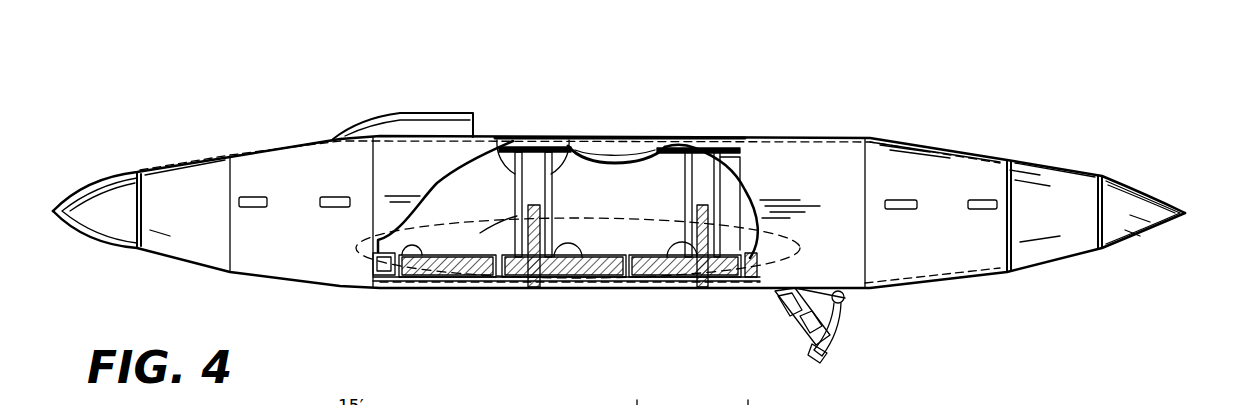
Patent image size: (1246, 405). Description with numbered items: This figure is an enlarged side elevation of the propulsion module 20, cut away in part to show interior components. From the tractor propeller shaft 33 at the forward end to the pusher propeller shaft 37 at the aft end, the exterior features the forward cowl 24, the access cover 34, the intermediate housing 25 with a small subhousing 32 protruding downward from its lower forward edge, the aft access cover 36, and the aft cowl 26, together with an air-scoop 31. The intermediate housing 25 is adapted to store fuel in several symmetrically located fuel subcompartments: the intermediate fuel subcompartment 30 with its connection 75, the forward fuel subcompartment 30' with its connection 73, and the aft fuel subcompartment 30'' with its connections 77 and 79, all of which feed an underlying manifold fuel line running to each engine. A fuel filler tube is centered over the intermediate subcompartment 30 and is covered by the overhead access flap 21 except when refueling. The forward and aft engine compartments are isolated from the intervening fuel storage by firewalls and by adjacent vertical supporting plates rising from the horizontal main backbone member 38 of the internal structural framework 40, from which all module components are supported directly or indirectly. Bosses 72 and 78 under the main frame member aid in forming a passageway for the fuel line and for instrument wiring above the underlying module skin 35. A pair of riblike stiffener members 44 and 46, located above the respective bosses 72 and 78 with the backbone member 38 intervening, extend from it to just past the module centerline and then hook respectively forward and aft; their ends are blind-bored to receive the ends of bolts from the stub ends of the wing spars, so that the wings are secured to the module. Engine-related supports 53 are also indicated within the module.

The propulsion module 20 is at (487, 114).
The overhead access flap 21 is at (622, 137).
The forward cowl 24 is at (1050, 235).
The intermediate housing 25 is at (733, 128).
The aft cowl 26 is at (187, 178).
The intermediate fuel subcompartment 30 is at (533, 138).
The forward fuel subcompartment 30' is at (727, 180).
The aft fuel subcompartment 30'' is at (463, 162).
The air-scoop 31 is at (425, 113).
The small subhousing 32 is at (858, 298).
The tractor propeller shaft 33 is at (1130, 248).
The access cover 34 is at (935, 172).
The module skin 35 is at (386, 288).
The aft access cover 36 is at (302, 168).
The pusher propeller shaft 37 is at (118, 245).
The horizontal main backbone member 38 is at (623, 288).
The internal structural framework 40 is at (553, 288).
The riblike stiffener member 44 is at (670, 288).
The riblike stiffener member 46 is at (572, 288).
The supports 53 is at (707, 288).
The boss 72 is at (527, 288).
The connection 73 is at (742, 252).
The connection 75 is at (632, 252).
The connection 77 is at (505, 235).
The boss 78 is at (695, 288).
The connection 79 is at (423, 288).